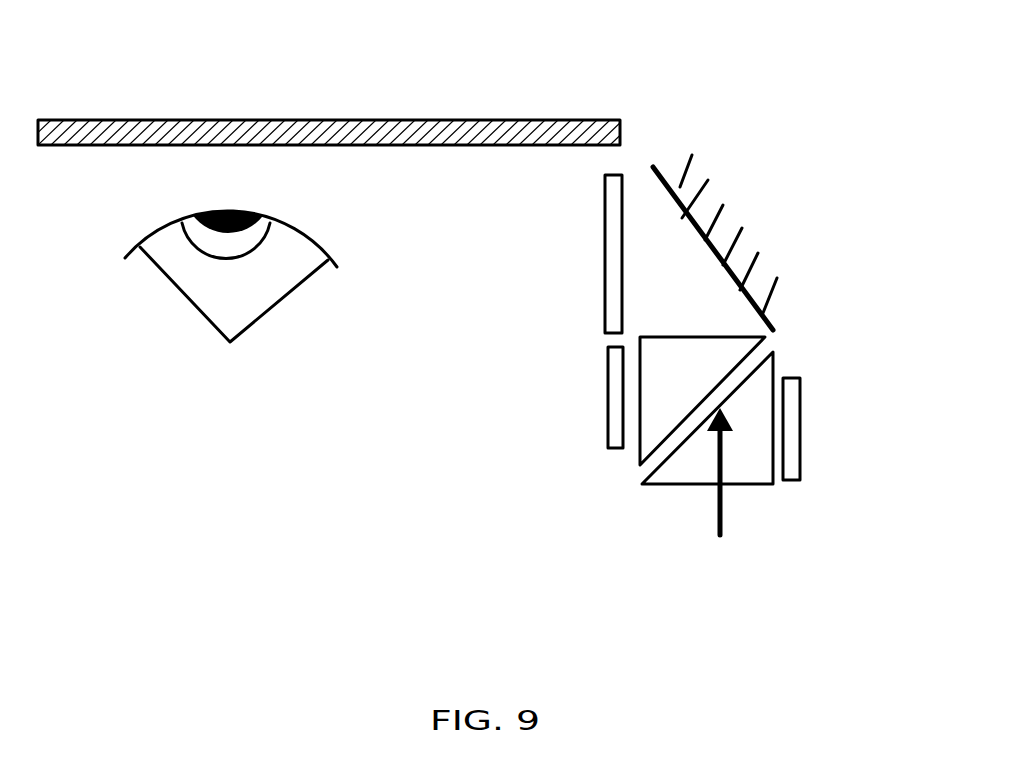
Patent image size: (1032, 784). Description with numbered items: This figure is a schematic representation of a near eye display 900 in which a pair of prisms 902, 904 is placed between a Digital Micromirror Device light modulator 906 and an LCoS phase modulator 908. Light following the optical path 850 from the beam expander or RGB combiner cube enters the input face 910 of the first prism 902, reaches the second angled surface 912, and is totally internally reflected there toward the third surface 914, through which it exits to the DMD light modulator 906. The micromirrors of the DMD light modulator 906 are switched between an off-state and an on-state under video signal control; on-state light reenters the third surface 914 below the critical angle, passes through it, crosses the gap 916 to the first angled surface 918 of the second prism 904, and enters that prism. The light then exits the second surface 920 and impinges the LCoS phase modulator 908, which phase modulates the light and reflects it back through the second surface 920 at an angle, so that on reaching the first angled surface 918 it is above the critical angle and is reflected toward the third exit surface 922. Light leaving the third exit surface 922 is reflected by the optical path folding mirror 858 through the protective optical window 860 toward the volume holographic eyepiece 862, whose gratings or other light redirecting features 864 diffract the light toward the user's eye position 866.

The near eye display 900 is at (345, 60).
The optical path 850 is at (715, 510).
The optical path folding mirror 858 is at (702, 191).
The protective optical window 860 is at (605, 243).
The volume holographic eyepiece 862 is at (502, 120).
The light redirecting features 864 is at (160, 120).
The eye position 866 is at (180, 222).
The first prism 902 is at (765, 403).
The second prism 904 is at (645, 353).
The DMD light modulator 906 is at (792, 447).
The LCoS phase modulator 908 is at (610, 398).
The input face 910 is at (748, 488).
The second angled surface 912 is at (632, 462).
The third surface 914 is at (777, 363).
The gap 916 is at (772, 342).
The first angled surface 918 is at (715, 357).
The second surface 920 is at (618, 366).
The third exit surface 922 is at (742, 333).